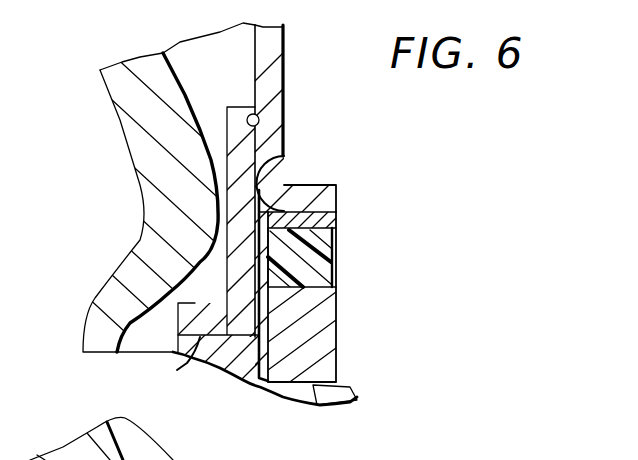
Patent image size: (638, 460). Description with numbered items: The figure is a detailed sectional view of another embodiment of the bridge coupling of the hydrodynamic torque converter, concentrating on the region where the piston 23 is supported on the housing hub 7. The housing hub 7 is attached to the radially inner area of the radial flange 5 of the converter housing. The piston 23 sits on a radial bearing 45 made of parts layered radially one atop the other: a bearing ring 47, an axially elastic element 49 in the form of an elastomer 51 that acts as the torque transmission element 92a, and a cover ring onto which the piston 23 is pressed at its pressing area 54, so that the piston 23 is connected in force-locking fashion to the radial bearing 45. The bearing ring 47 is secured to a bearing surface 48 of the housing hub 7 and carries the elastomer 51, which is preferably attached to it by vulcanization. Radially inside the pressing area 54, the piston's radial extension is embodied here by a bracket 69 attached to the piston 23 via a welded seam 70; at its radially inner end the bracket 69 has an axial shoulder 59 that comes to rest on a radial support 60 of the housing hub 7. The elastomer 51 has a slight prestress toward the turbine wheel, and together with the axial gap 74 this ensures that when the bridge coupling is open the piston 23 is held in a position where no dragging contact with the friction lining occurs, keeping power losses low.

The radial flange 5 is at (143, 155).
The housing hub 7 is at (227, 370).
The piston 23 is at (275, 42).
The radial bearing 45 is at (338, 305).
The bearing ring 47 is at (322, 352).
The bearing surface 48 is at (313, 385).
The axially elastic element 49 is at (337, 187).
The elastomer 51 is at (313, 260).
The pressing area 54 is at (287, 190).
The axial shoulder 59 is at (193, 305).
The radial support 60 is at (187, 365).
The bracket 69 is at (229, 147).
The welded seam 70 is at (218, 137).
The axial gap 74 is at (263, 278).
The torque transmission element 92a is at (321, 233).